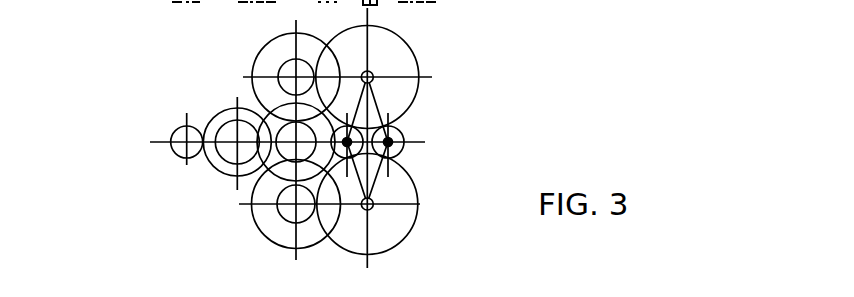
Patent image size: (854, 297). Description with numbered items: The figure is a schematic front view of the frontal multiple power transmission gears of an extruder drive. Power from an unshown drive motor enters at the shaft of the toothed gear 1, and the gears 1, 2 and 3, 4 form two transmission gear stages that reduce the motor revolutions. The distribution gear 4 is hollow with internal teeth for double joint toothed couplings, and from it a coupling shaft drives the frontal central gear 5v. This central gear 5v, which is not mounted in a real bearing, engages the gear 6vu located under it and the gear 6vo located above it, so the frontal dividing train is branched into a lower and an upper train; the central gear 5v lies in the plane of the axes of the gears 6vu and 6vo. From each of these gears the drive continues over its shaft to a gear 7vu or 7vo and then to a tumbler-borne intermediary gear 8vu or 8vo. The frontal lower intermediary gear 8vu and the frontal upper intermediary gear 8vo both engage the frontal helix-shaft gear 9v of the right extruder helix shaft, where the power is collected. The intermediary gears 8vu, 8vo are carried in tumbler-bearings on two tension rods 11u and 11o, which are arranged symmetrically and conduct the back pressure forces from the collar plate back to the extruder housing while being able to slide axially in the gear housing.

The toothed gear 1 is at (173, 155).
The gear 2 is at (213, 168).
The gear 3 is at (215, 128).
The distribution gear 4 is at (282, 104).
The frontal central gear 5v is at (263, 165).
The frontal upper gear 6vo is at (262, 50).
The frontal lower gear 6vu is at (257, 230).
The frontal upper gear 7vo is at (306, 60).
The frontal lower gear 7vu is at (303, 223).
The frontal upper intermediary gear 8vo is at (417, 95).
The frontal lower intermediary gear 8vu is at (412, 230).
The frontal helix-shaft gear 9v is at (395, 132).
The upper tension rod 11o is at (372, 71).
The lower tension rod 11u is at (371, 200).